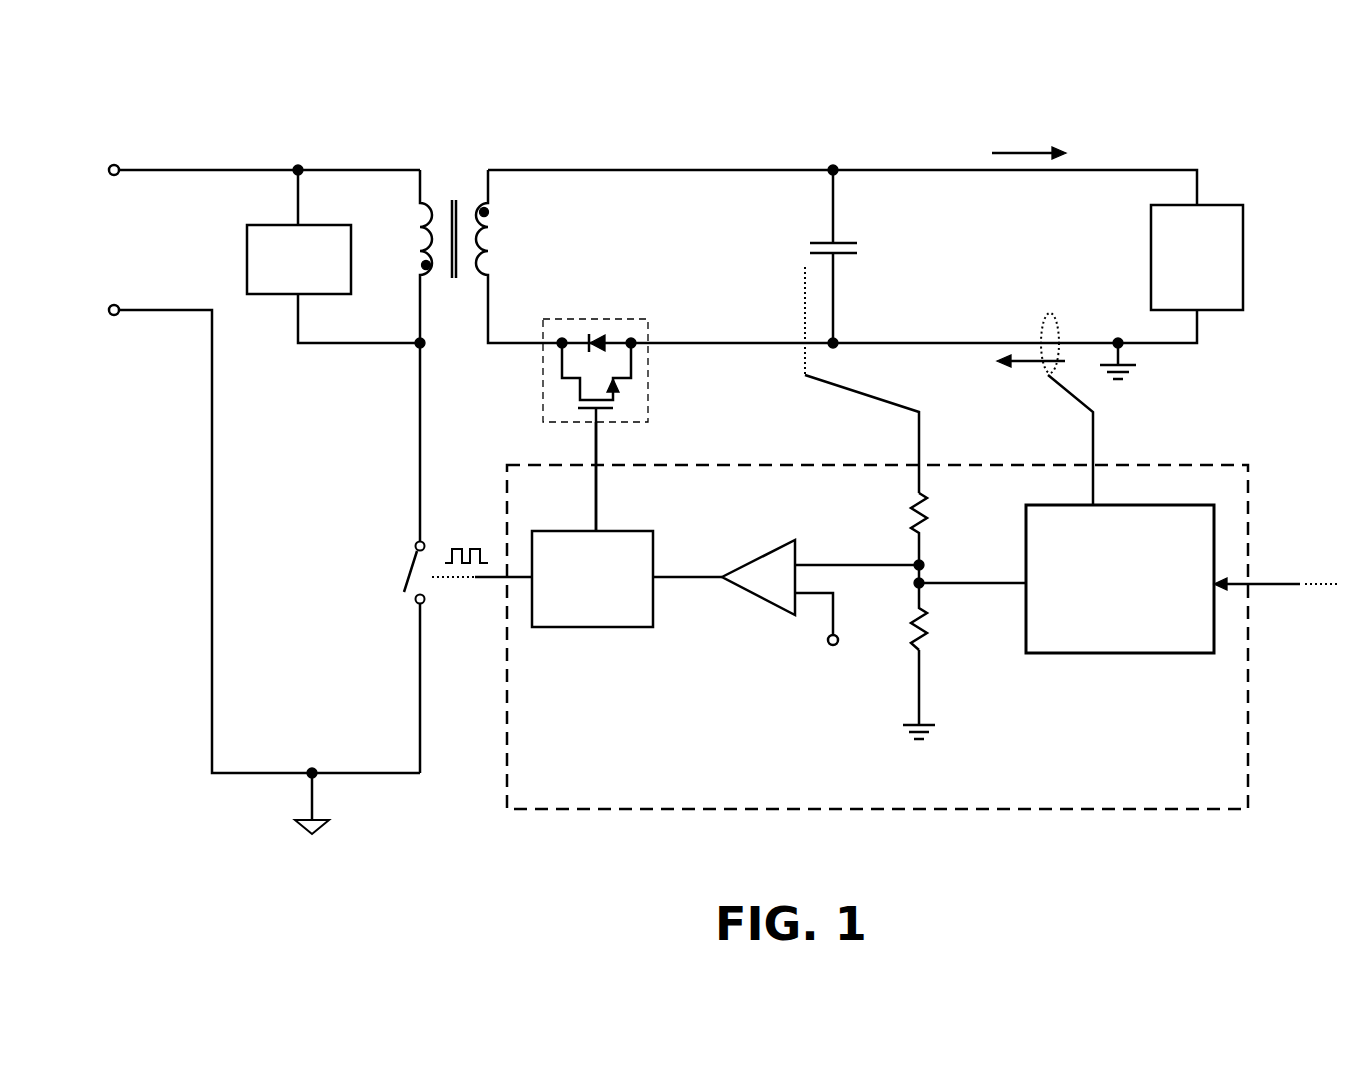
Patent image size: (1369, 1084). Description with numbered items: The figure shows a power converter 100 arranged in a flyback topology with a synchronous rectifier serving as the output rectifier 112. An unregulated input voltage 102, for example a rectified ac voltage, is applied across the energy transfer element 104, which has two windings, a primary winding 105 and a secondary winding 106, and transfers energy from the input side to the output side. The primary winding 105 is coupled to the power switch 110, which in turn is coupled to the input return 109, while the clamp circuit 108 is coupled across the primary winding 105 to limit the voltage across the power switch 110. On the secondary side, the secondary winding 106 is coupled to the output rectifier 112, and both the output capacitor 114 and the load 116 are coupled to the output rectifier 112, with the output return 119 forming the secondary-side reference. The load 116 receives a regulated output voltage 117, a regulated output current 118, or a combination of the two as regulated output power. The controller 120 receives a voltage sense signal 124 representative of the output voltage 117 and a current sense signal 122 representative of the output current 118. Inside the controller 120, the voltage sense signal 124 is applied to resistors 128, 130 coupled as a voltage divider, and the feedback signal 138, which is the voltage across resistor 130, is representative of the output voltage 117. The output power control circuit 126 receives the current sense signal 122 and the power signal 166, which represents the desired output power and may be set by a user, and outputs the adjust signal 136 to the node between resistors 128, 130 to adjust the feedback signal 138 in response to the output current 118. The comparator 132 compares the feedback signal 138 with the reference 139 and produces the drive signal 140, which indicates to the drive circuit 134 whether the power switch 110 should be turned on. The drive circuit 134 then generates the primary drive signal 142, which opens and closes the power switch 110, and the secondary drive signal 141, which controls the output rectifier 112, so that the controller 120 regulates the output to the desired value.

The power converter 100 is at (1232, 87).
The input voltage 102 is at (91, 222).
The energy transfer element 104 is at (450, 305).
The primary winding 105 is at (405, 214).
The secondary winding 106 is at (500, 213).
The clamp circuit 108 is at (240, 256).
The input return 109 is at (292, 830).
The power switch 110 is at (365, 578).
The output rectifier 112 is at (610, 312).
The output capacitor 114 is at (895, 228).
The load 116 is at (1225, 200).
The output voltage 117 is at (760, 265).
The output current 118 is at (1040, 127).
The output return 119 is at (1145, 375).
The controller 120 is at (1225, 457).
The current sense signal 122 is at (1105, 435).
The voltage sense signal 124 is at (930, 437).
The output power control circuit 126 is at (1173, 663).
The resistor 128 is at (932, 505).
The resistor 130 is at (912, 655).
The comparator 132 is at (770, 612).
The drive circuit 134 is at (605, 632).
The adjust signal 136 is at (985, 592).
The feedback signal 138 is at (852, 530).
The reference 139 is at (828, 688).
The drive signal 140 is at (683, 590).
The secondary drive signal 141 is at (612, 505).
The primary drive signal 142 is at (458, 628).
The power signal 166 is at (1302, 553).